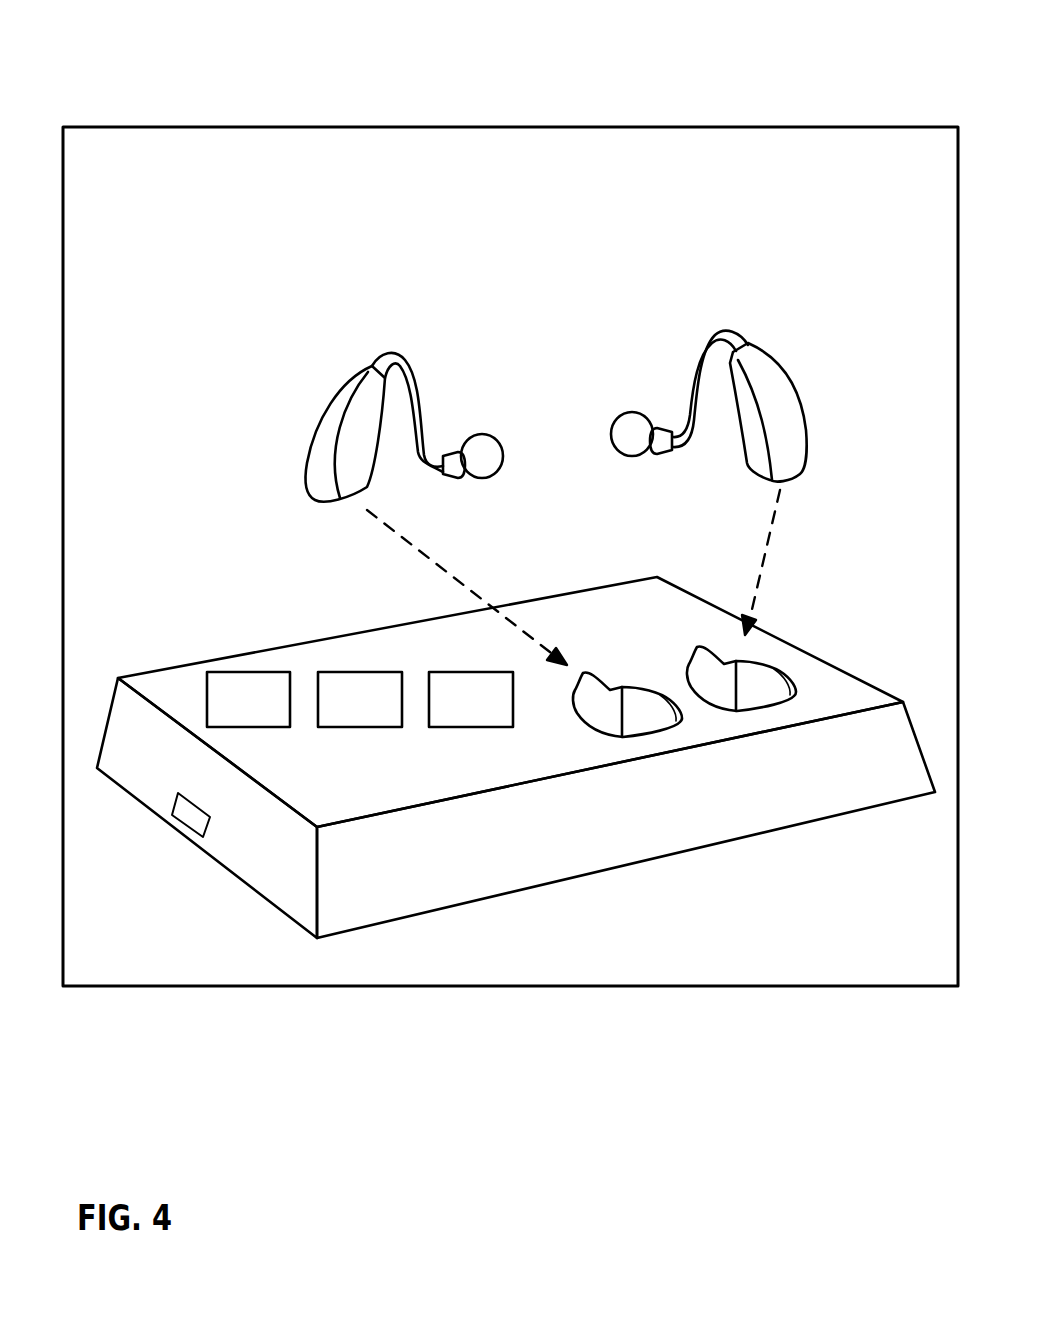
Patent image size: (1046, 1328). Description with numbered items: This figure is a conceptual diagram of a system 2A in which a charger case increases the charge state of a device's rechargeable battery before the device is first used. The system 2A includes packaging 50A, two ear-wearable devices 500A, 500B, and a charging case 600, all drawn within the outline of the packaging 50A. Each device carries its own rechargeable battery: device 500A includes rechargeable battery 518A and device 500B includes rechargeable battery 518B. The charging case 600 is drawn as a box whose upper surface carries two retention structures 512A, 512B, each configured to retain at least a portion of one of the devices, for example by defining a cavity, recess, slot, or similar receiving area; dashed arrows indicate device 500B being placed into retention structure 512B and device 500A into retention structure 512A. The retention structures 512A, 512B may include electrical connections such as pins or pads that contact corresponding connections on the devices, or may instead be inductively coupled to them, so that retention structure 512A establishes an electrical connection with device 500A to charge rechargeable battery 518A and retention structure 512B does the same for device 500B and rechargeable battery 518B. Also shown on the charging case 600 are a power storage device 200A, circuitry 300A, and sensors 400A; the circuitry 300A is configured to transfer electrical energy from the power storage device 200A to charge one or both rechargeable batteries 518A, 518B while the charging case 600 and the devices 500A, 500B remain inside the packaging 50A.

The system 2A is at (124, 66).
The packaging 50A is at (533, 189).
The device 500A is at (657, 344).
The device 500B is at (462, 382).
The rechargeable battery 518A is at (793, 428).
The rechargeable battery 518B is at (315, 455).
The retention structure 512A is at (757, 700).
The retention structure 512B is at (632, 720).
The charging case 600 is at (608, 872).
The power storage device 200A is at (276, 712).
The circuitry 300A is at (387, 712).
The sensors 400A is at (498, 712).